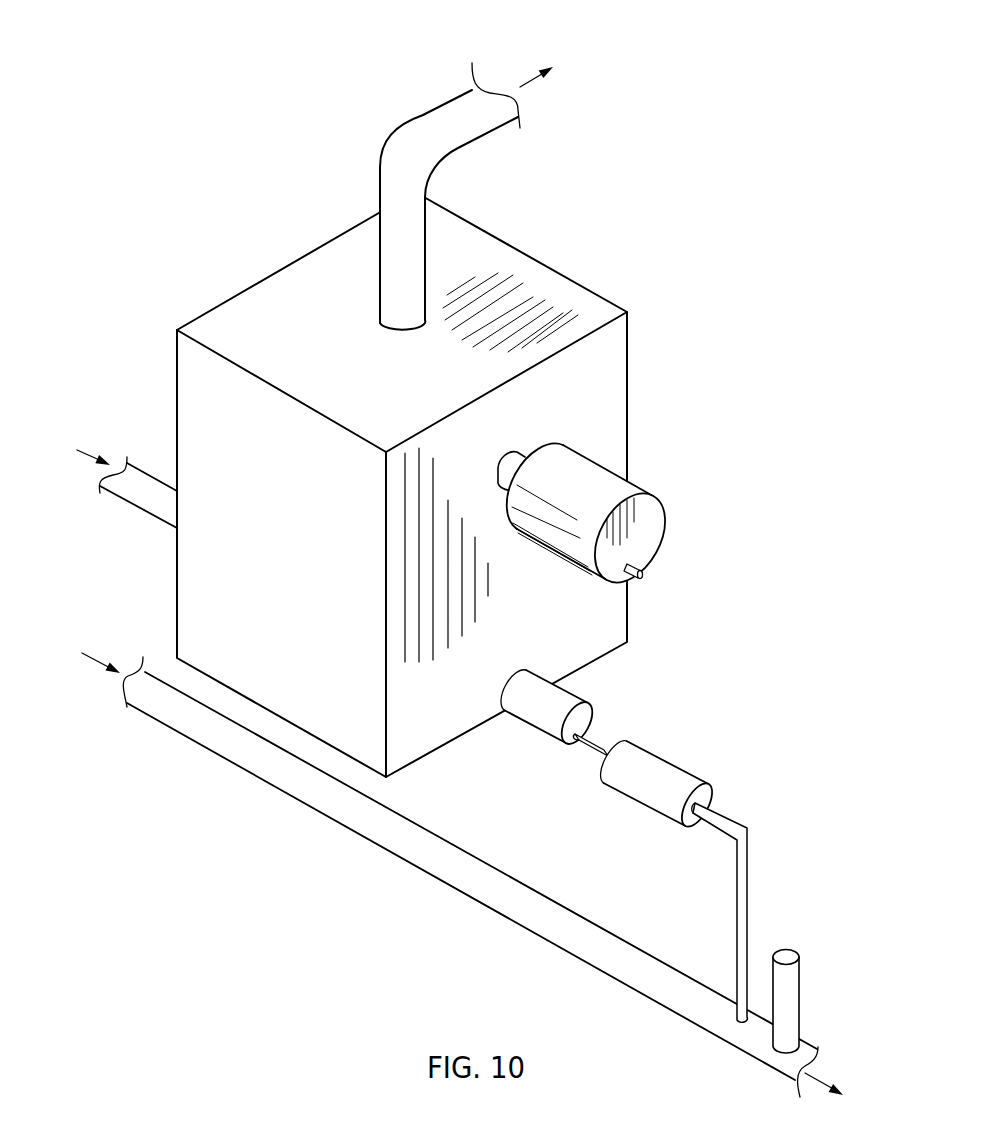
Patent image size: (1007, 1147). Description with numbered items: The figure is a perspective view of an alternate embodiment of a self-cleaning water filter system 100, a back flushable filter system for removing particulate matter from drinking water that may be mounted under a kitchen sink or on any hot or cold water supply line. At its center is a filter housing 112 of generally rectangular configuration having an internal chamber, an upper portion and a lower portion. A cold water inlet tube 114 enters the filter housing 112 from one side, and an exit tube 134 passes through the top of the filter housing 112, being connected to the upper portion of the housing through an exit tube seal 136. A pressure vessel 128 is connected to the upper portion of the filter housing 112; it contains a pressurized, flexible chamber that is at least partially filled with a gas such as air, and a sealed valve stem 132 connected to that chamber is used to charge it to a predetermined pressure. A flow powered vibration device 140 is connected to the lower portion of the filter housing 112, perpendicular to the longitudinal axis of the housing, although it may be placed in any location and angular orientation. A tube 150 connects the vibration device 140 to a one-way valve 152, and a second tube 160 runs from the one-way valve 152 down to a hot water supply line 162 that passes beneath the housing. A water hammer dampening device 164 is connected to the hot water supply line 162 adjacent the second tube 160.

The self-cleaning water filter system 100 is at (212, 96).
The filter housing 112 is at (555, 295).
The cold water inlet tube 114 is at (147, 497).
The pressure vessel 128 is at (592, 478).
The sealed valve stem 132 is at (643, 572).
The exit tube 134 is at (452, 118).
The exit tube seal 136 is at (378, 317).
The flow powered vibration device 140 is at (543, 708).
The tube 150 is at (597, 742).
The one-way valve 152 is at (655, 785).
The second tube 160 is at (743, 903).
The hot water supply line 162 is at (293, 780).
The water hammer dampening device 164 is at (785, 950).